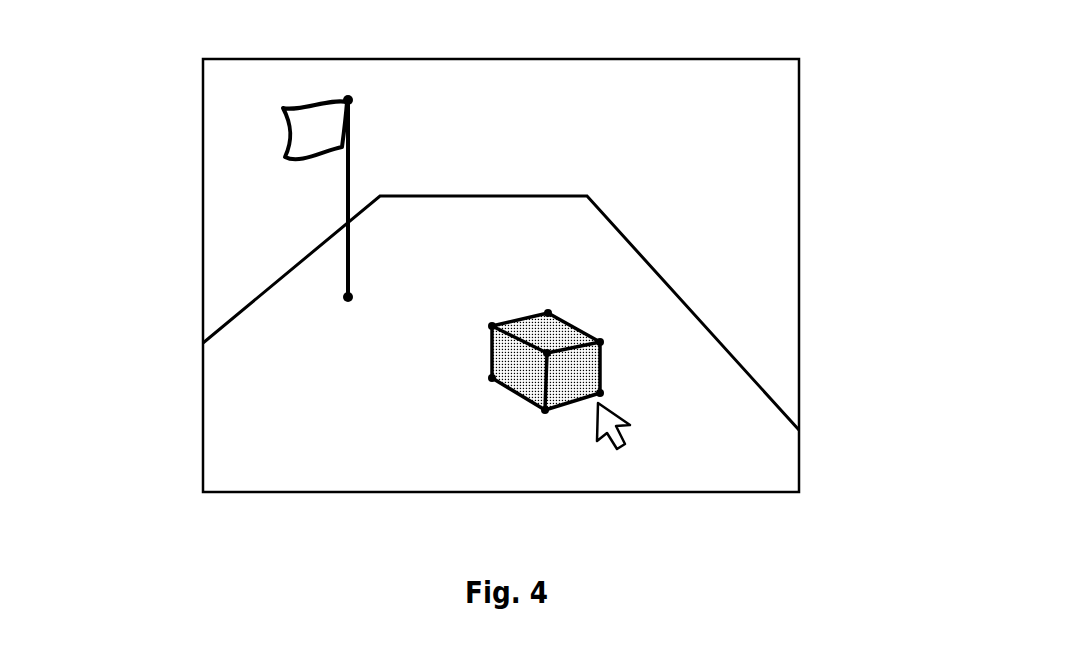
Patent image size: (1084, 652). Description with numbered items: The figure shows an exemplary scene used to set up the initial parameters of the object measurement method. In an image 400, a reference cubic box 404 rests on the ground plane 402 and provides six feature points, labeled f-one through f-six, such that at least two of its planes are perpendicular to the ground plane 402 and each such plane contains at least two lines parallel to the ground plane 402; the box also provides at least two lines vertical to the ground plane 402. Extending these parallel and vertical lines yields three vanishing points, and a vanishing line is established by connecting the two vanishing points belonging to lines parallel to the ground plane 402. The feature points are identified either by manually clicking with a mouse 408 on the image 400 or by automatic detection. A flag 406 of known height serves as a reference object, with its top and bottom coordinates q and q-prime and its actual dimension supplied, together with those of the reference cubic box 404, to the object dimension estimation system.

The image 400 is at (203, 118).
The ground plane 402 is at (703, 320).
The reference cubic box 404 is at (460, 357).
The flag 406 is at (333, 203).
The mouse 408 is at (638, 452).